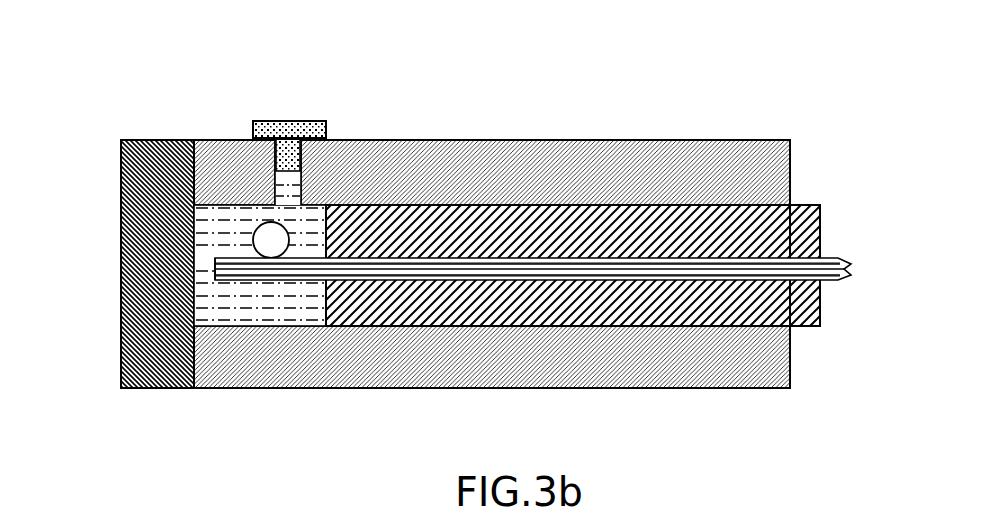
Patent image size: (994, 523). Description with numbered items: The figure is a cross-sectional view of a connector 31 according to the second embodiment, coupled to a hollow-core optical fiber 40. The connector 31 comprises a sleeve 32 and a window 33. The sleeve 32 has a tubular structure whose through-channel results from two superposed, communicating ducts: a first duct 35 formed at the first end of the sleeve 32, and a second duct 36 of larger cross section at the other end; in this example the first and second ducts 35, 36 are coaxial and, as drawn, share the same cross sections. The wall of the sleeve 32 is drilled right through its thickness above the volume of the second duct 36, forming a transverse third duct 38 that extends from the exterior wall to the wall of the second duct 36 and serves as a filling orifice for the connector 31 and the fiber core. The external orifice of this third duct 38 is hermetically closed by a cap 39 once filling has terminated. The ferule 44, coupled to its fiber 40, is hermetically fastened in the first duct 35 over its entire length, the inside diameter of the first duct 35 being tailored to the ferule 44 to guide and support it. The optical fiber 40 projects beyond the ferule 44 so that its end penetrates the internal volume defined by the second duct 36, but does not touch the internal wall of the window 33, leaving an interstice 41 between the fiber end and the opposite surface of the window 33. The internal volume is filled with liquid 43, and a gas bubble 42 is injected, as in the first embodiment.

The connector 31 is at (773, 98).
The sleeve 32 is at (555, 132).
The window 33 is at (143, 133).
The first duct 35 is at (580, 320).
The second duct 36 is at (255, 318).
The third duct 38 is at (293, 172).
The cap 39 is at (277, 113).
The optical fiber 40 is at (830, 250).
The interstice 41 is at (207, 267).
The gas bubble 42 is at (255, 232).
The liquid 43 is at (295, 305).
The ferule 44 is at (800, 318).